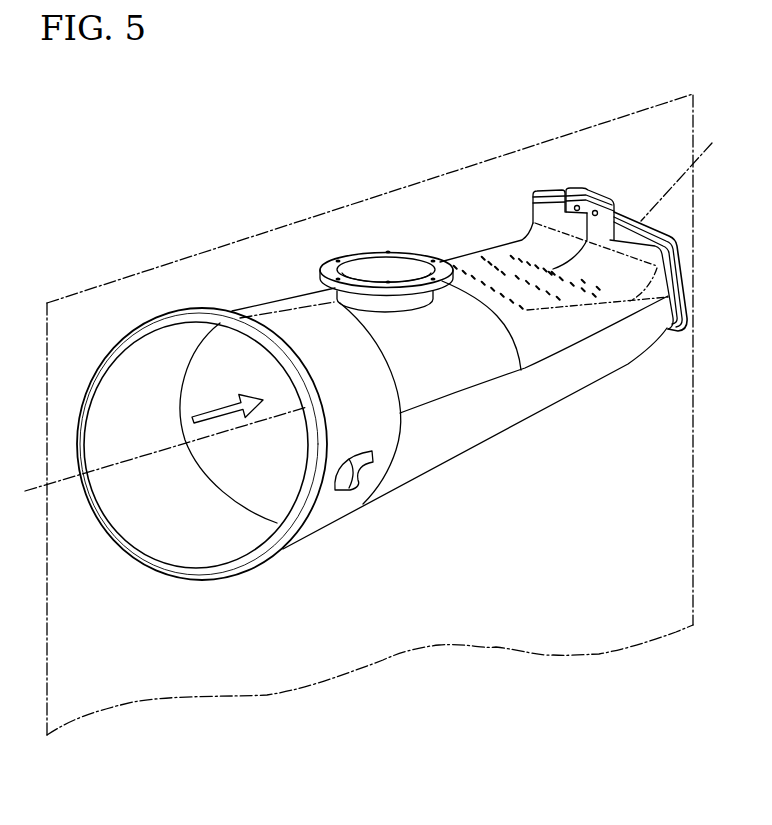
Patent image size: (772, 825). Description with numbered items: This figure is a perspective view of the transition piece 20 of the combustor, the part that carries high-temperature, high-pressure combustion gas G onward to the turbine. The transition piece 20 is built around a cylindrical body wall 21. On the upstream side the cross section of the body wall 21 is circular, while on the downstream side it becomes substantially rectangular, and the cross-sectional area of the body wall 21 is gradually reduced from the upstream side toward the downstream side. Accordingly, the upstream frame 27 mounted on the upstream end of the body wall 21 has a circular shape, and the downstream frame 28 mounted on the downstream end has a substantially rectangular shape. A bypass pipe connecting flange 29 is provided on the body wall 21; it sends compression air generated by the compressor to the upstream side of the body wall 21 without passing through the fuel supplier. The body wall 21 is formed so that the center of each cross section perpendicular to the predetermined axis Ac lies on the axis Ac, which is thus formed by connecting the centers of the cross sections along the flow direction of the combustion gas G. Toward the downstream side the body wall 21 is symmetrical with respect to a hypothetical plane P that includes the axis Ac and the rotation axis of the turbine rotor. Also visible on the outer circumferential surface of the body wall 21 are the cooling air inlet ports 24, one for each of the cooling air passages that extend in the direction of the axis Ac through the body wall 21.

The transition piece 20 is at (419, 387).
The body wall 21 is at (439, 452).
The cooling air inlet port 24 is at (501, 270).
The upstream frame 27 is at (217, 579).
The downstream frame 28 is at (685, 300).
The bypass pipe connecting flange 29 is at (401, 253).
The combustion gas G is at (217, 408).
The axis Ac is at (142, 461).
The hypothetical plane P is at (549, 138).